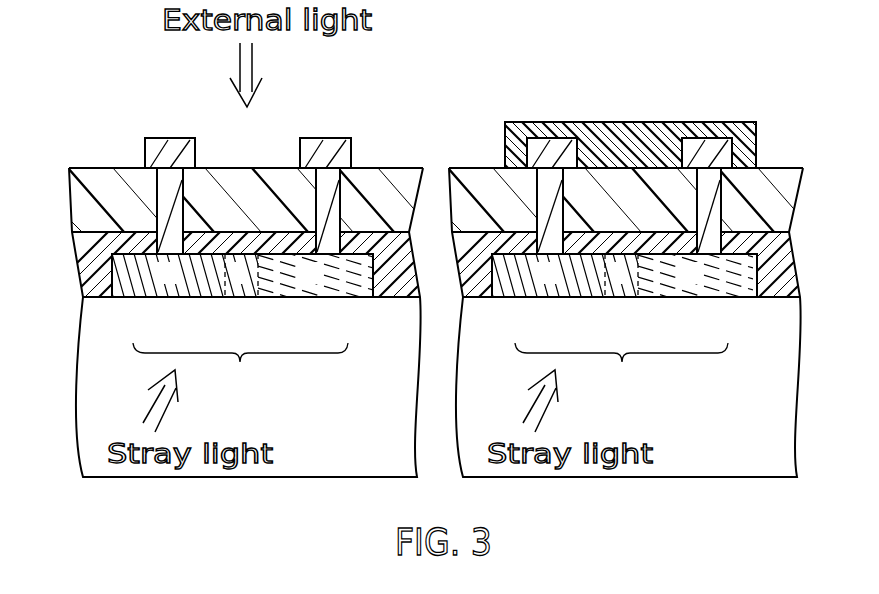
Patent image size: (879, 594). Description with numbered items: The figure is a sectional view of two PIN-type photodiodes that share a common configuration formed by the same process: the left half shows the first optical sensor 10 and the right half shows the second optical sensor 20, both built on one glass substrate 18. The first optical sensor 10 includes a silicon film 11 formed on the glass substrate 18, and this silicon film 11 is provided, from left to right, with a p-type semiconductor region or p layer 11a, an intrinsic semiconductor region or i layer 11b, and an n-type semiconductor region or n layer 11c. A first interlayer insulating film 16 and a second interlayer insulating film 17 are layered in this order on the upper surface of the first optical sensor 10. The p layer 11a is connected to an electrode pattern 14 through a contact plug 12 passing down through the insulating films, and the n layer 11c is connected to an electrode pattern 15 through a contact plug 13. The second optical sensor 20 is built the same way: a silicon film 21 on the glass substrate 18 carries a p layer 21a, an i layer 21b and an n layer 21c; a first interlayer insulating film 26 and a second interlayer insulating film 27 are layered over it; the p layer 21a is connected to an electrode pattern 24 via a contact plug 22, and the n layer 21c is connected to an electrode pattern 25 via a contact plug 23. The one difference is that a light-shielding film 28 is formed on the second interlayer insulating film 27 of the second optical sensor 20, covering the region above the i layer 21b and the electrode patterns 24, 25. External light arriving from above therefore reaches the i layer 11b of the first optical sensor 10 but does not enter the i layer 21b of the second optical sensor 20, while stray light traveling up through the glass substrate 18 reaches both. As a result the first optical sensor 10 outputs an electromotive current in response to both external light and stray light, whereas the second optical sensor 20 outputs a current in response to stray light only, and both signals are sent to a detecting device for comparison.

The first optical sensor 10 is at (240, 371).
The silicon film 11 is at (100, 275).
The p-type semiconductor region 11a is at (170, 300).
The intrinsic semiconductor region 11b is at (242, 300).
The n-type semiconductor region 11c is at (316, 300).
The contact plug 12 is at (168, 207).
The contact plug 13 is at (330, 205).
The electrode pattern 14 is at (172, 140).
The electrode pattern 15 is at (322, 140).
The first interlayer insulating film 16 is at (77, 250).
The second interlayer insulating film 17 is at (77, 200).
The glass substrate 18 is at (82, 378).
The second optical sensor 20 is at (621, 373).
The silicon film 21 is at (758, 272).
The p layer 21a is at (551, 300).
The i layer 21b is at (625, 300).
The n layer 21c is at (698, 300).
The contact plug 22 is at (548, 207).
The contact plug 23 is at (712, 205).
The electrode pattern 24 is at (553, 148).
The electrode pattern 25 is at (705, 148).
The first interlayer insulating film 26 is at (793, 249).
The second interlayer insulating film 27 is at (792, 203).
The light-shielding film 28 is at (621, 125).